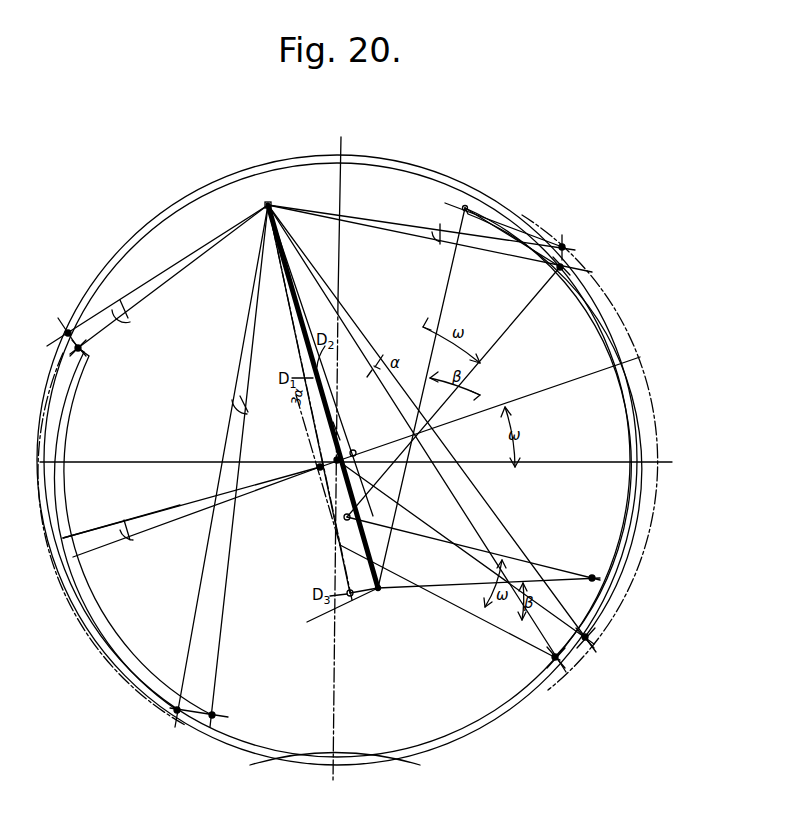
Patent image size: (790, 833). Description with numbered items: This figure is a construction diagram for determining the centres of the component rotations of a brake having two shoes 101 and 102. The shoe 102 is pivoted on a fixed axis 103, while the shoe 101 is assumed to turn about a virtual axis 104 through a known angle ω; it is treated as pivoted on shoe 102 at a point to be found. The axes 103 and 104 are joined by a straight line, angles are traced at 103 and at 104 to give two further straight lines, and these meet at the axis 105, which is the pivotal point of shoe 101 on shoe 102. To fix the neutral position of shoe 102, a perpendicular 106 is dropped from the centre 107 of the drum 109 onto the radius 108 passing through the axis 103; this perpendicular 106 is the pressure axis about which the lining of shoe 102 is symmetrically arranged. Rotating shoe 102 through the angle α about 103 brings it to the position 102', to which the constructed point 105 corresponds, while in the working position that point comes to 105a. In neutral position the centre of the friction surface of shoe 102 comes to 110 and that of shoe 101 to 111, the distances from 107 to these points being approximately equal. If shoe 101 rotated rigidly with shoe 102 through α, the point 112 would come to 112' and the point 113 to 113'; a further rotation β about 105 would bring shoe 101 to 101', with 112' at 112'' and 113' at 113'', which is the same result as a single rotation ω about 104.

The shoe 101 is at (353, 460).
The shoe position 101' is at (352, 460).
The shoe 102 is at (128, 531).
The shoe position 102' is at (115, 529).
The pivot axis 103 is at (270, 203).
The virtual axis 104 is at (343, 521).
The axis 105 is at (378, 590).
The point 105a is at (318, 617).
The perpendicular 106 is at (157, 510).
The centre of the drum 107 is at (318, 466).
The radius 108 is at (333, 422).
The drum 109 is at (335, 784).
The centre of the friction surface of shoe 102 110 is at (355, 452).
The centre of the friction surface of shoe 101 111 is at (320, 478).
The point 112 is at (532, 660).
The point 112' is at (612, 648).
The point 112'' is at (629, 577).
The point 113 is at (594, 256).
The point 113' is at (592, 233).
The point 113'' is at (505, 219).